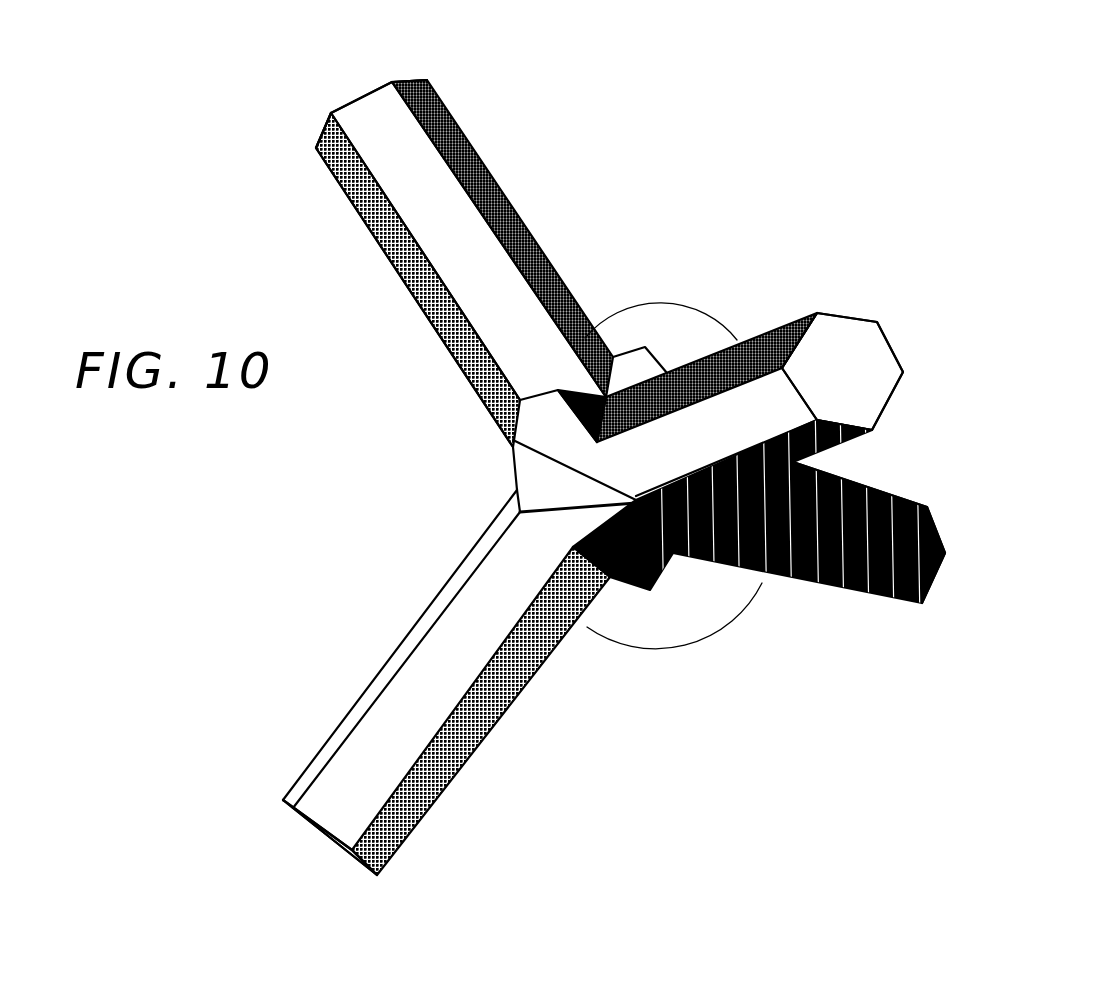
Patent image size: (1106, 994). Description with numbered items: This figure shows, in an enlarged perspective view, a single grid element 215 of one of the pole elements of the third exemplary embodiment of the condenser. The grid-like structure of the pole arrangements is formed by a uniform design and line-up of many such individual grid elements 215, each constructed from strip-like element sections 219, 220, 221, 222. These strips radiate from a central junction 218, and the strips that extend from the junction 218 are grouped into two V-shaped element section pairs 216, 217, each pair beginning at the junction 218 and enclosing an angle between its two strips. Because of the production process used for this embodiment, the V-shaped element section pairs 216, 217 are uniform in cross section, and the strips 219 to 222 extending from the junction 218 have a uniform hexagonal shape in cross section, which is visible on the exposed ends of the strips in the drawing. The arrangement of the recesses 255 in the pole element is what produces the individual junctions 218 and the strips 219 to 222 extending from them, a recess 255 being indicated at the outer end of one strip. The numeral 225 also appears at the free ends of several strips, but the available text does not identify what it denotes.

The grid element 215 is at (848, 150).
The V-shaped element section pair 216 is at (605, 268).
The V-shaped element section pair 217 is at (572, 652).
The junction 218 is at (515, 448).
The strip-like element section 219 is at (347, 190).
The strip-like element section 220 is at (778, 337).
The strip-like element section 221 is at (457, 743).
The strip-like element section 222 is at (845, 605).
The leg end 225 is at (866, 345).
The recess 255 is at (363, 100).